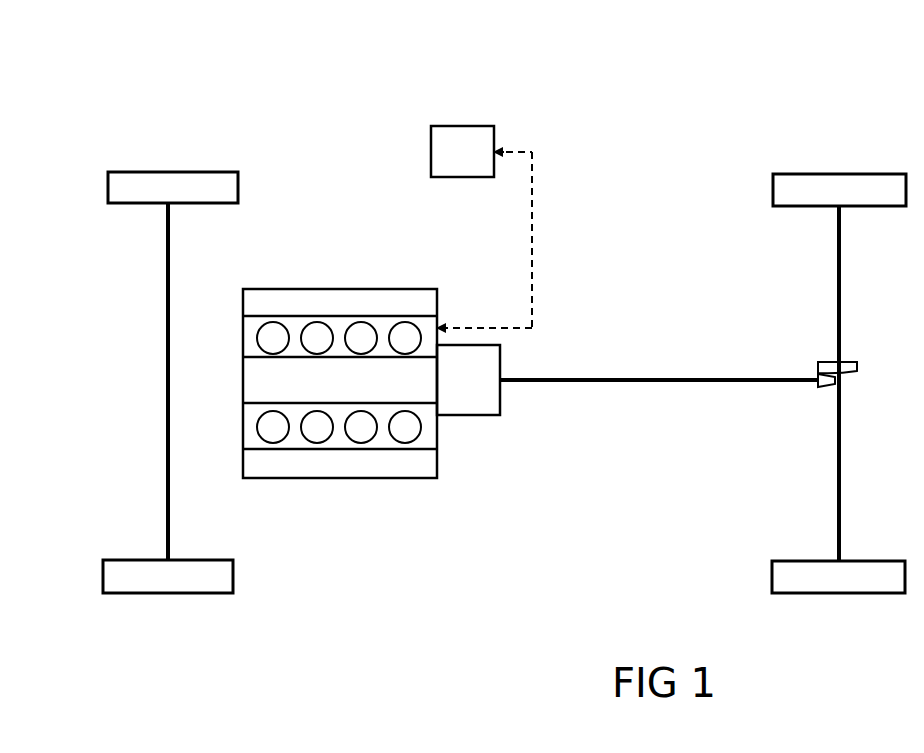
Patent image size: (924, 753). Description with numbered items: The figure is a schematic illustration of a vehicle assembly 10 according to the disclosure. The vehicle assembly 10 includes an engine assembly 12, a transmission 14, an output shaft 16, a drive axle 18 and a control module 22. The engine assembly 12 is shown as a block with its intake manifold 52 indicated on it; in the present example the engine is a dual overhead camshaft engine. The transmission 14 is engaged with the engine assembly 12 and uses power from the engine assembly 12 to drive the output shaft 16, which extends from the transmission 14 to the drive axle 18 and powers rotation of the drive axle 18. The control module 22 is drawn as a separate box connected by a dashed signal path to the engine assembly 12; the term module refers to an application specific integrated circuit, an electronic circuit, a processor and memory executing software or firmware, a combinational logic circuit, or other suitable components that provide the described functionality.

The vehicle assembly 10 is at (72, 91).
The engine assembly 12 is at (462, 492).
The intake manifold 52 is at (340, 383).
The transmission 14 is at (468, 380).
The control module 22 is at (481, 227).
The output shaft 16 is at (653, 378).
The drive axle 18 is at (840, 303).